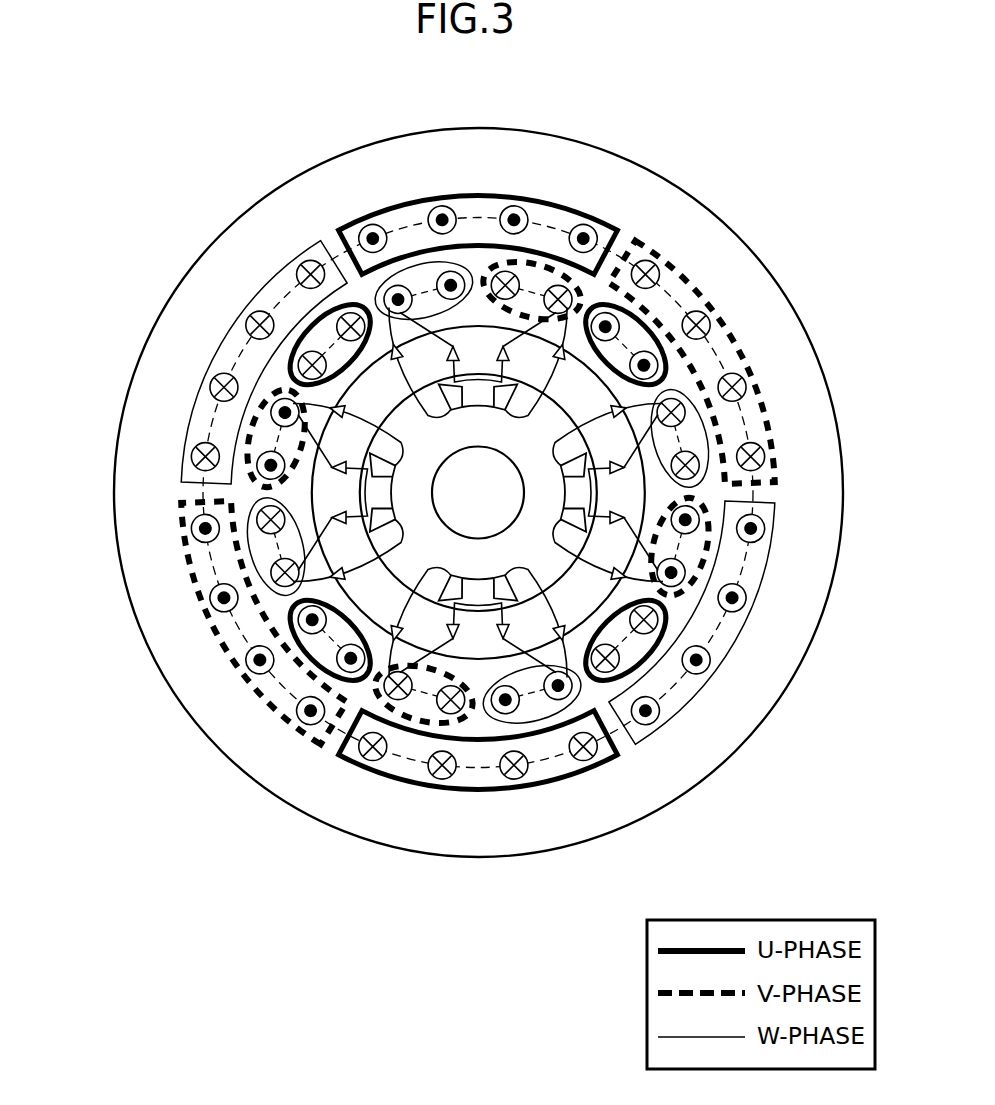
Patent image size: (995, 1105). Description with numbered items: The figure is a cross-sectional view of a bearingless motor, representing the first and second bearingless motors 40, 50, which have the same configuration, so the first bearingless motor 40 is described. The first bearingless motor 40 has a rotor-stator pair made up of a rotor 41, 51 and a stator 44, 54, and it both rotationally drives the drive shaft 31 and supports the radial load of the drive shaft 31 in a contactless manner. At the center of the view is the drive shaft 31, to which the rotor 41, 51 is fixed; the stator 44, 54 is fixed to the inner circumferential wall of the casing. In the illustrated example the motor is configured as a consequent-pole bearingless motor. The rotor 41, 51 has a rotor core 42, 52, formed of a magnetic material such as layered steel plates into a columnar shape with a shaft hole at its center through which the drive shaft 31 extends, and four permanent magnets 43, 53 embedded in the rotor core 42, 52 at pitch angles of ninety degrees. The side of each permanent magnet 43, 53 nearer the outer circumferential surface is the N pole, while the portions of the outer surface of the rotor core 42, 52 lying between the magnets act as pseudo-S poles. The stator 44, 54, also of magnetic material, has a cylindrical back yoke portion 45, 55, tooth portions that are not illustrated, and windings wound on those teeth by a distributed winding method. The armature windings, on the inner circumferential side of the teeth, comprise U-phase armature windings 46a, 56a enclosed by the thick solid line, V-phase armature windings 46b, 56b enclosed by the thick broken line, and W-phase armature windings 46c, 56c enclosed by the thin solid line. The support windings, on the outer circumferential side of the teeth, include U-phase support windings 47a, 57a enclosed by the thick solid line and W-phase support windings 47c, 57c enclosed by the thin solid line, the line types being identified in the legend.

The first bearingless motor 40 is at (470, 482).
The second bearingless motor 50 is at (470, 482).
The rotor 41 is at (608, 479).
The rotor 51 is at (608, 479).
The rotor core 42 is at (570, 422).
The rotor core 52 is at (568, 412).
The permanent magnet 43 is at (646, 490).
The permanent magnet 53 is at (548, 436).
The stator 44 is at (478, 458).
The stator 54 is at (741, 129).
The back yoke portion 45 is at (478, 413).
The back yoke portion 55 is at (560, 157).
The U-phase support winding 47a is at (478, 173).
The U-phase support winding 57a is at (514, 206).
The W-phase support winding 47c is at (184, 492).
The W-phase support winding 57c is at (214, 377).
The U-phase armature winding 46a is at (267, 705).
The U-phase armature winding 56a is at (350, 672).
The V-phase armature winding 46b is at (410, 781).
The V-phase armature winding 56b is at (448, 714).
The W-phase armature winding 46c is at (554, 780).
The W-phase armature winding 56c is at (508, 714).
The drive shaft 31 is at (524, 492).